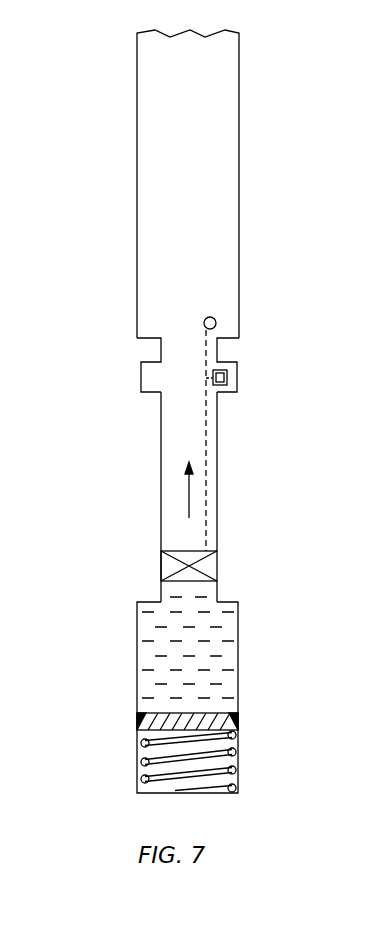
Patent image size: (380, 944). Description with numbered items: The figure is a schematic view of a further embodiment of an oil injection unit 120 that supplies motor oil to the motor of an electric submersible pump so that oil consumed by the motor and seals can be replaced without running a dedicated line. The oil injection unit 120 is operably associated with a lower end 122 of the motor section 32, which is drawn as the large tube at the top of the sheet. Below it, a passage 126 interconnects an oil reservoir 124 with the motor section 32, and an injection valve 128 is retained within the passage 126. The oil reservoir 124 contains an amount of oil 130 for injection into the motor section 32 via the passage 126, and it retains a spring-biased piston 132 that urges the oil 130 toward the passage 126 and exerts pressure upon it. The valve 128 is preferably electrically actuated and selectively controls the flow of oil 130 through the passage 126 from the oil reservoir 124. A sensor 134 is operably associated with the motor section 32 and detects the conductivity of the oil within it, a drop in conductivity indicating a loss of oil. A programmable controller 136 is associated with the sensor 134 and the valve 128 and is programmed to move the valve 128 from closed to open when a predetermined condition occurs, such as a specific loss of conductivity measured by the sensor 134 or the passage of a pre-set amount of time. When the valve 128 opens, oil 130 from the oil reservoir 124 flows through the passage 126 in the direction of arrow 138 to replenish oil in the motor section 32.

The motor section 32 is at (225, 115).
The oil injection unit 120 is at (262, 479).
The lower end 122 is at (150, 340).
The oil reservoir 124 is at (238, 633).
The passage 126 is at (160, 432).
The injection valve 128 is at (170, 565).
The oil 130 is at (152, 663).
The spring-biased piston 132 is at (213, 712).
The sensor 134 is at (216, 321).
The programmable controller 136 is at (227, 378).
The arrow 138 is at (187, 500).